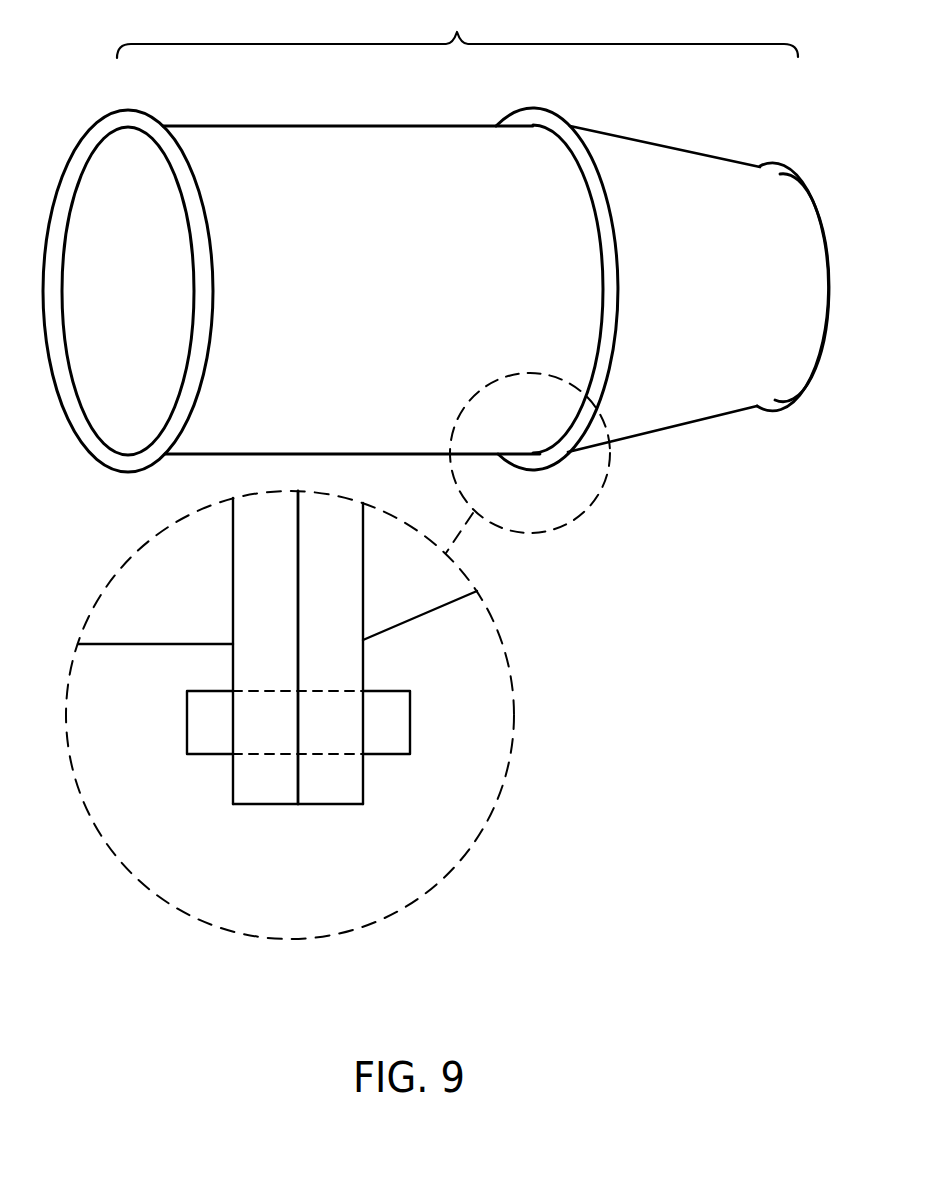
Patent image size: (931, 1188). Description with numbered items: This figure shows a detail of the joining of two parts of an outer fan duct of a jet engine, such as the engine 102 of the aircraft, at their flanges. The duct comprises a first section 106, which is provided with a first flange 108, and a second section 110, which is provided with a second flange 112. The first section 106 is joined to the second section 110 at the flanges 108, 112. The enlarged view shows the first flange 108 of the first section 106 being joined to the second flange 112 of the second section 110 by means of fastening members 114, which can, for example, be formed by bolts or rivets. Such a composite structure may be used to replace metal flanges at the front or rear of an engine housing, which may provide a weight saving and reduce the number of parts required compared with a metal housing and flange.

The first engine 102 is at (457, 29).
The first section 106 is at (342, 125).
The first flange 108 is at (537, 106).
The second section 110 is at (697, 125).
The second flange 112 is at (333, 806).
The fastening members 114 is at (387, 735).